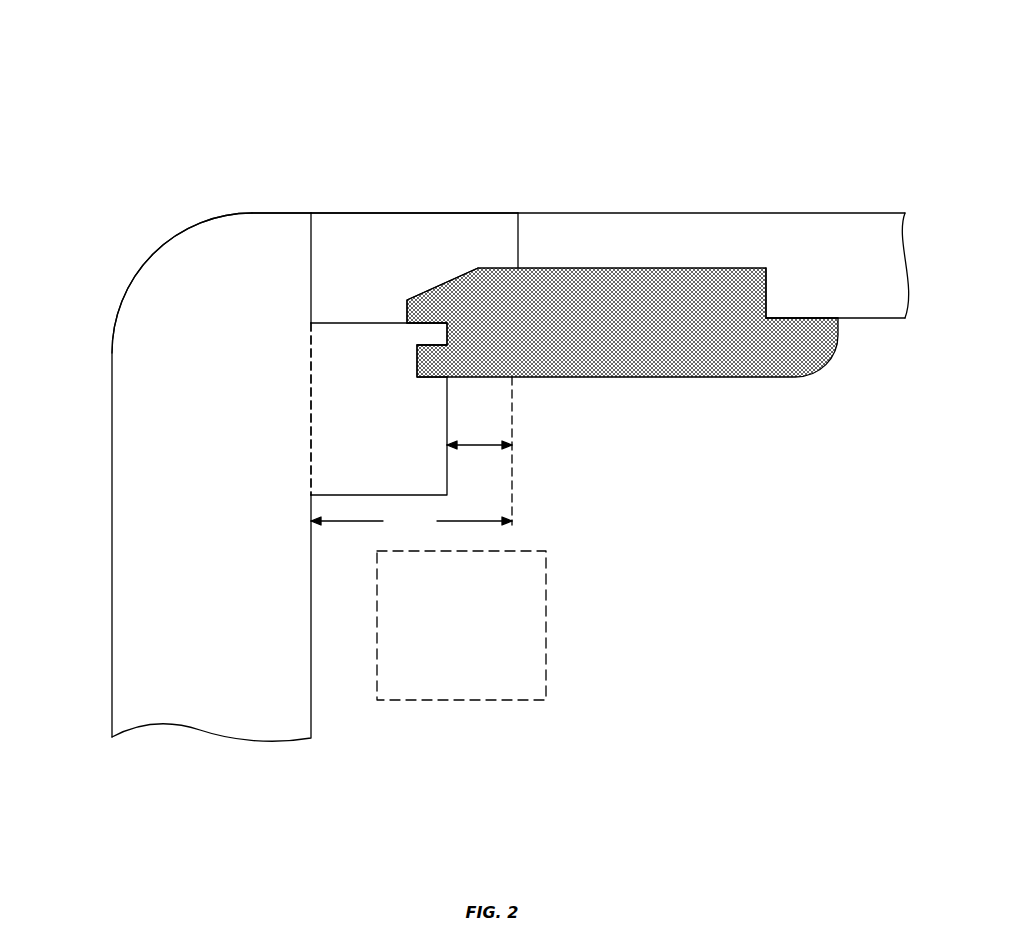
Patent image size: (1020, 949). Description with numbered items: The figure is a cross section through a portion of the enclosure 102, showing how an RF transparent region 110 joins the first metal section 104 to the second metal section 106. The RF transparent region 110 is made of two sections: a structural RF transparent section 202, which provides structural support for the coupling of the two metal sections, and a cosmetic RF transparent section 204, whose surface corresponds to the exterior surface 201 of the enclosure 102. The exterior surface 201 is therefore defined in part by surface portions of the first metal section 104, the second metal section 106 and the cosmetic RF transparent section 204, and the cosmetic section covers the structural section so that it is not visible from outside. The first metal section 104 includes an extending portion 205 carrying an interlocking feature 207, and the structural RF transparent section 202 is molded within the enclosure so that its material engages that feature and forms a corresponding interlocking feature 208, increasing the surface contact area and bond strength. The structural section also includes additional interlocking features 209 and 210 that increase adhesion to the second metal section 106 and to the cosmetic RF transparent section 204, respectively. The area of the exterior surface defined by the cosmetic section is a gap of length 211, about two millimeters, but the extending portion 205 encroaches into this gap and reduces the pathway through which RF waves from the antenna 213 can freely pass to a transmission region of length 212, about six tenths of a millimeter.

The enclosure 102 is at (300, 82).
The first metal section 104 is at (112, 521).
The second metal section 106 is at (695, 213).
The RF transparent region 110 is at (562, 268).
The exterior surface 201 is at (188, 195).
The structural RF transparent section 202 is at (645, 378).
The cosmetic RF transparent section 204 is at (398, 213).
The extending portion 205 is at (379, 409).
The interlocking feature 207 is at (433, 333).
The corresponding interlocking feature 208 is at (420, 373).
The additional interlocking feature 209 is at (763, 300).
The additional interlocking feature 210 is at (410, 310).
The length 211 is at (411, 521).
The length 212 is at (478, 450).
The antenna 213 is at (461, 625).